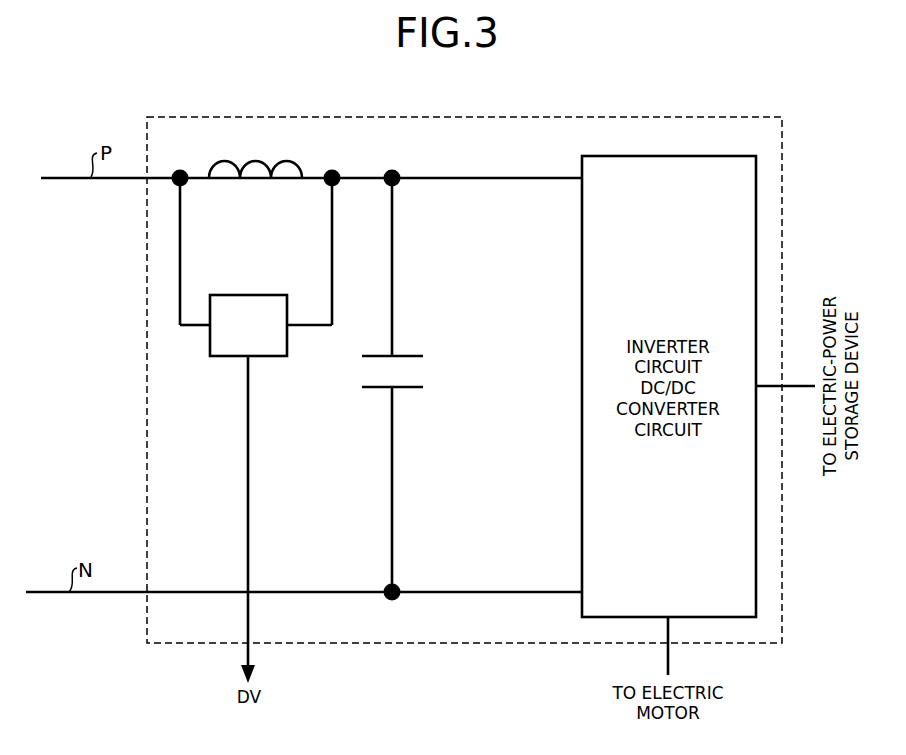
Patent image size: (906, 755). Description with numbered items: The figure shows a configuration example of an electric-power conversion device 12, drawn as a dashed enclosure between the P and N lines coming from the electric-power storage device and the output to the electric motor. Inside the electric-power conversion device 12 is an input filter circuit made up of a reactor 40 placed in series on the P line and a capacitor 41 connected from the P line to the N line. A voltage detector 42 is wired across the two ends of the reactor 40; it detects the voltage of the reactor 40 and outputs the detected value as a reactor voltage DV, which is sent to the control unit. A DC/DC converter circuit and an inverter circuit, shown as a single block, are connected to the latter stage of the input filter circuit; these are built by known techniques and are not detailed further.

The electric-power conversion device 12 is at (632, 117).
The reactor 40 is at (226, 160).
The capacitor 41 is at (409, 356).
The voltage detector 42 is at (255, 295).